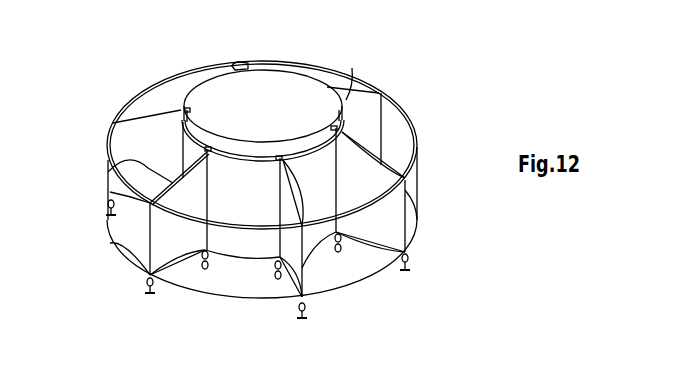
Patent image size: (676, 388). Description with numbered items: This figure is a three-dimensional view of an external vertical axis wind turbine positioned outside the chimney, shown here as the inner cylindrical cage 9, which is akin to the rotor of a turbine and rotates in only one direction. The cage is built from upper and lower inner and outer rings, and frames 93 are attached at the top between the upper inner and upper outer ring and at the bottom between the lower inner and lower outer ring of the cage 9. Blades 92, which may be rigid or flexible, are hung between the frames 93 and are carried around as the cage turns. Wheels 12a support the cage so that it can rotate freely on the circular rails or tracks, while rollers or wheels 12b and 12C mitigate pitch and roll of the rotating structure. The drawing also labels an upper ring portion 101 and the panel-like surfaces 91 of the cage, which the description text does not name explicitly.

The inner cylindrical cage 9 is at (409, 107).
The central hub ring 101 is at (305, 66).
The rollers/wheels 12C is at (352, 68).
The curved panel 91 is at (262, 229).
The blades 92 is at (277, 209).
The frame 93 is at (109, 170).
The wheels 12a is at (410, 259).
The rollers/wheels 12b is at (296, 318).